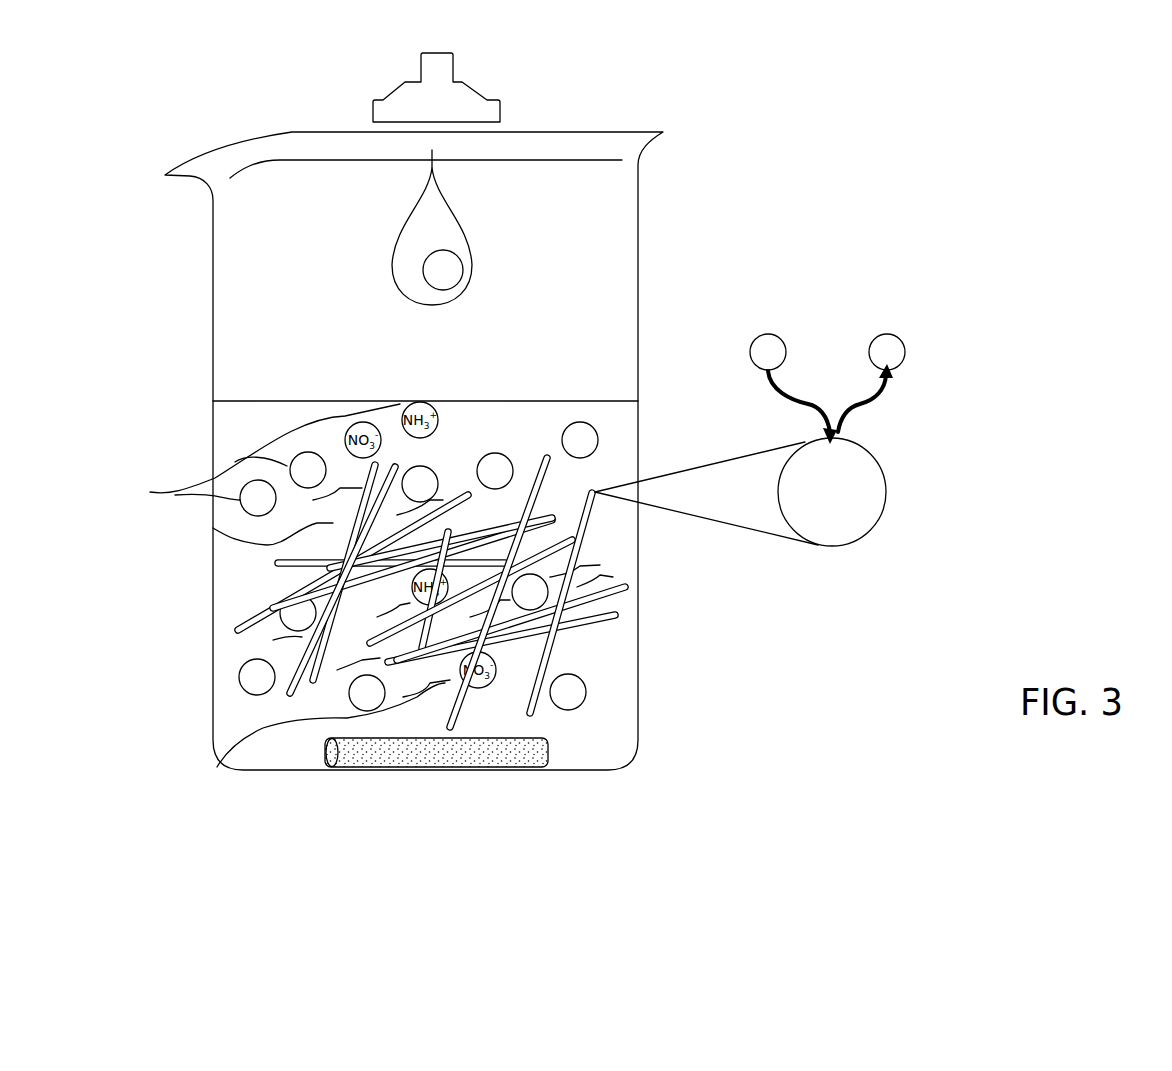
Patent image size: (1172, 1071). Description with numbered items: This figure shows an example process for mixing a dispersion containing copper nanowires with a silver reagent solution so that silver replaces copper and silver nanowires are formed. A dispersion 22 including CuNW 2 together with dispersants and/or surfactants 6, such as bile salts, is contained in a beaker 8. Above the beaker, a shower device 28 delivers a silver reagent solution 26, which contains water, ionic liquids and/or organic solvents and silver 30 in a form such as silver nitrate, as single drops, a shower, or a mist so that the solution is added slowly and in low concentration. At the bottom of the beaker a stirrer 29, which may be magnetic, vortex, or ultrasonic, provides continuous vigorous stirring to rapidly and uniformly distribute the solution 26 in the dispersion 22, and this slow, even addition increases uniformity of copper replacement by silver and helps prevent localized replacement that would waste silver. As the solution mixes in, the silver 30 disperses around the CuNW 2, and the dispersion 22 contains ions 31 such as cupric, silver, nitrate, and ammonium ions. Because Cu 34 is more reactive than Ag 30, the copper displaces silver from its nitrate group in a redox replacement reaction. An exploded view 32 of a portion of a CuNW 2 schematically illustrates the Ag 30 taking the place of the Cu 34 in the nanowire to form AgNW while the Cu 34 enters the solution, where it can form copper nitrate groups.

The CuNW 2 is at (327, 592).
The surfactants 6 is at (217, 767).
The beaker 8 is at (638, 250).
The dispersion 22 is at (560, 390).
The silver reagent solution 26 is at (420, 210).
The shower device 28 is at (487, 95).
The stirrer 29 is at (555, 752).
The silver 30 is at (422, 272).
The ions 31 is at (160, 494).
The exploded view 32 is at (810, 565).
The Cu 34 is at (906, 352).